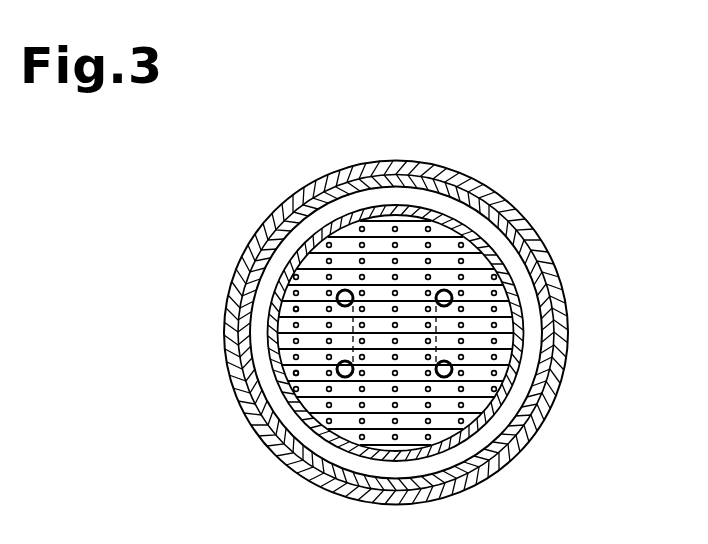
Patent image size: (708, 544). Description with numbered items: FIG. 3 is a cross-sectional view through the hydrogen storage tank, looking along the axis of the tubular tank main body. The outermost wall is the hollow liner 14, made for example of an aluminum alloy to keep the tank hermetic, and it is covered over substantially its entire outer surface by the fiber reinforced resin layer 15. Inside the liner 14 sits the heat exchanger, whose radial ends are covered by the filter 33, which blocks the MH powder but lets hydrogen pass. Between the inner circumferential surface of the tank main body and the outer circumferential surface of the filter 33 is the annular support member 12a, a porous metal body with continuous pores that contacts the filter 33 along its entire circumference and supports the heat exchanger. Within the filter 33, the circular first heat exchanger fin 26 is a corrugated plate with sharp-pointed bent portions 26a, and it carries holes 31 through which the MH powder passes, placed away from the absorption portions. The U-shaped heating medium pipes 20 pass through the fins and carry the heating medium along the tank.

The support member 12a is at (528, 318).
The liner 14 is at (463, 175).
The fiber reinforced resin layer 15 is at (507, 202).
The heating medium pipe 20 is at (345, 298).
The first heat exchanger fin 26 is at (293, 292).
The bent portion 26a is at (293, 374).
The hole 31 is at (293, 342).
The filter 33 is at (353, 217).